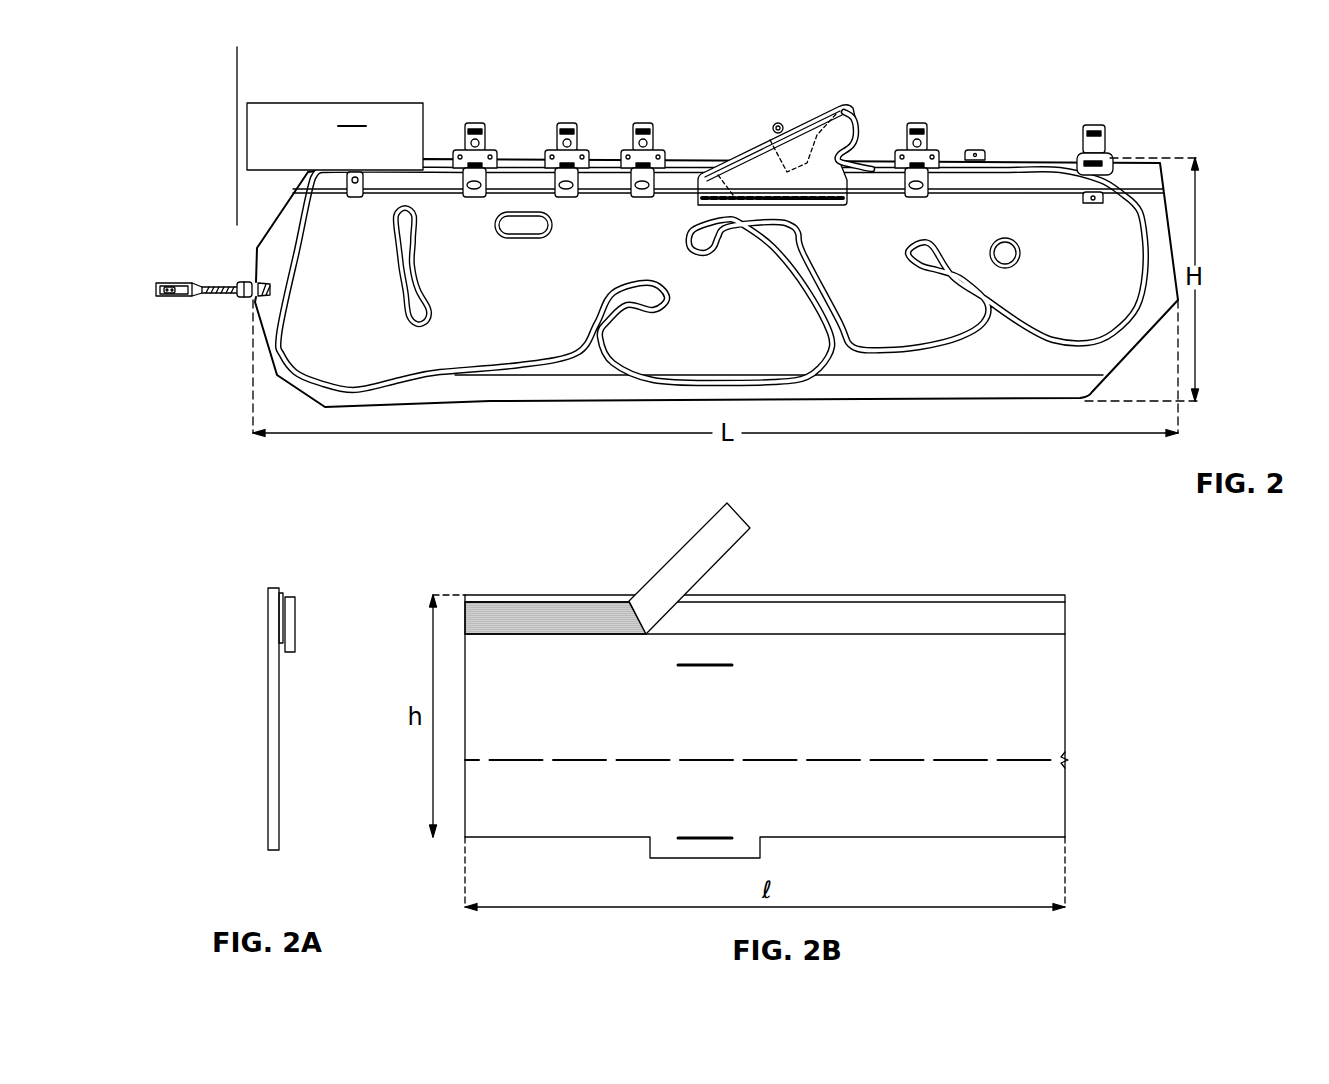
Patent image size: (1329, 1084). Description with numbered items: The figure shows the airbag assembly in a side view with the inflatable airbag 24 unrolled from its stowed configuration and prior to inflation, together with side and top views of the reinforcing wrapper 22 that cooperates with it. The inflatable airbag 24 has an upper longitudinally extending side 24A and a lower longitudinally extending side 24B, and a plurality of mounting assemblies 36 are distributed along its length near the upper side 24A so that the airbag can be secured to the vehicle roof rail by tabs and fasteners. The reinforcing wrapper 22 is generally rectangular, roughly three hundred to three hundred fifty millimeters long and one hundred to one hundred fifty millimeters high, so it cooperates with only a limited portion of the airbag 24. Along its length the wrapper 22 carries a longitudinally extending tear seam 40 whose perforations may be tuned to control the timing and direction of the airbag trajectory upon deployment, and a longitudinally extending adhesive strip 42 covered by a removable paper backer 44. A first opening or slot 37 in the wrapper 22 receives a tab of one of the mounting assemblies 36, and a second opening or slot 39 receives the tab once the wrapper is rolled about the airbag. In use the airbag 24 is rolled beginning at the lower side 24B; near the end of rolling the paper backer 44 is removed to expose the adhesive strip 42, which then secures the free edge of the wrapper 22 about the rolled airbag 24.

In FIG. 2, the reinforcing wrapper 22 is at (237, 118).
In FIG. 2A, the reinforcing wrapper 22 is at (246, 696).
In FIG. 2B, the reinforcing wrapper 22 is at (1091, 584).
In FIG. 2, the inflatable airbag 24 is at (283, 370).
In FIG. 2, the upper longitudinally extending side 24A is at (1143, 158).
In FIG. 2, the lower longitudinally extending side 24B is at (1047, 402).
In FIG. 2, the mounting assemblies 36 is at (372, 186).
In FIG. 2B, the first opening or slot 37 is at (705, 840).
In FIG. 2, the second opening or slot 39 is at (352, 127).
In FIG. 2B, the second opening or slot 39 is at (710, 667).
In FIG. 2B, the tear seam 40 is at (1025, 762).
In FIG. 2A, the adhesive strip 42 is at (282, 596).
In FIG. 2B, the adhesive strip 42 is at (513, 602).
In FIG. 2A, the paper backer 44 is at (296, 625).
In FIG. 2B, the paper backer 44 is at (858, 612).